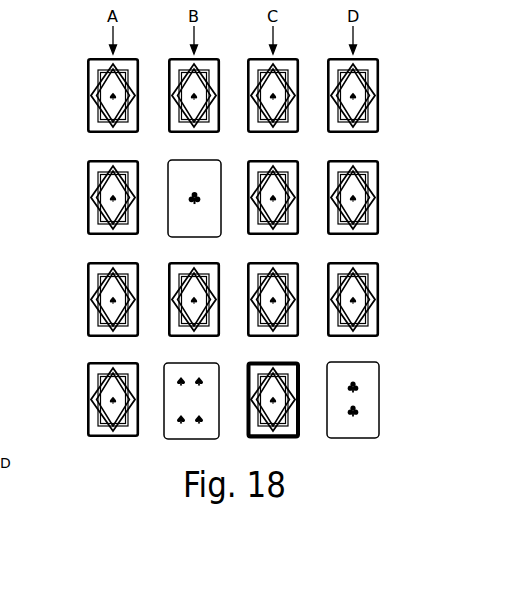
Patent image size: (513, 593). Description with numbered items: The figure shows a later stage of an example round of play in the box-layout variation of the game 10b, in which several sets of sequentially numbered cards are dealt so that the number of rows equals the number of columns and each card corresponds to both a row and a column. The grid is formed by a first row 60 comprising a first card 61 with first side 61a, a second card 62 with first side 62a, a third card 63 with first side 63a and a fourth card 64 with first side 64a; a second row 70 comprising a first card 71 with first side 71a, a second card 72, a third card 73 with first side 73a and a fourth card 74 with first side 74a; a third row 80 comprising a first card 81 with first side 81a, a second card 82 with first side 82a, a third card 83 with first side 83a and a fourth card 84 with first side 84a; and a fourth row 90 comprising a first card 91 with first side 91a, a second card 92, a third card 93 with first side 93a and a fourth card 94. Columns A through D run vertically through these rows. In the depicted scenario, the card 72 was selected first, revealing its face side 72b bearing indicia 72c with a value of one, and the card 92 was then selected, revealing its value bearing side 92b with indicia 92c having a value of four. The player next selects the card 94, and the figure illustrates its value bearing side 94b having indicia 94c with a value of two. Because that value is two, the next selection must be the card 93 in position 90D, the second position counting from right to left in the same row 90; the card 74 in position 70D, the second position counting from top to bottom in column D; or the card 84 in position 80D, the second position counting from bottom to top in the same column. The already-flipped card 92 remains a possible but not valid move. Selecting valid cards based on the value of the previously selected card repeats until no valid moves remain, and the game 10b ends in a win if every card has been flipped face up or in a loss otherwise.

The game 10b is at (44, 46).
The first row 60 is at (82, 96).
The second row 70 is at (82, 198).
The third row 80 is at (82, 300).
The fourth row 90 is at (82, 400).
The first card 61 is at (88, 58).
The second card 62 is at (169, 58).
The third card 63 is at (248, 58).
The fourth card 64 is at (328, 58).
The first side 61a is at (124, 128).
The first side 62a is at (205, 128).
The first side 63a is at (284, 128).
The first side 64a is at (364, 128).
The first card 71 is at (88, 160).
The second card 72 is at (169, 160).
The third card 73 is at (248, 160).
The fourth card 74 is at (328, 160).
The first side 71a is at (124, 230).
The face side 72b is at (202, 227).
The indicia 72c is at (176, 165).
The first side 73a is at (284, 230).
The first side 74a is at (364, 230).
The position 70D is at (363, 196).
The first card 81 is at (88, 262).
The second card 82 is at (169, 262).
The third card 83 is at (248, 262).
The fourth card 84 is at (328, 262).
The first side 81a is at (124, 332).
The first side 82a is at (205, 332).
The first side 83a is at (284, 332).
The first side 84a is at (364, 332).
The position 80D is at (363, 298).
The first card 91 is at (88, 362).
The second card 92 is at (169, 362).
The third card 93 is at (248, 362).
The fourth card 94 is at (328, 362).
The first side 91a is at (124, 432).
The value bearing side 92b is at (200, 428).
The indicia 92c is at (176, 375).
The first side 93a is at (284, 432).
The value bearing side 94b is at (363, 432).
The indicia 94c is at (340, 372).
The position 90D is at (283, 404).